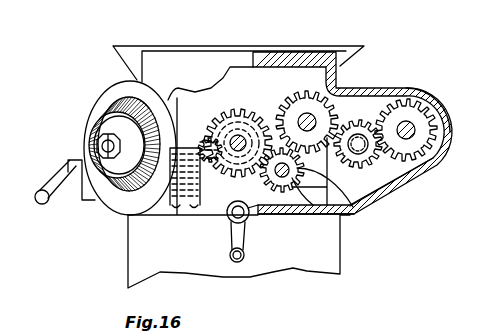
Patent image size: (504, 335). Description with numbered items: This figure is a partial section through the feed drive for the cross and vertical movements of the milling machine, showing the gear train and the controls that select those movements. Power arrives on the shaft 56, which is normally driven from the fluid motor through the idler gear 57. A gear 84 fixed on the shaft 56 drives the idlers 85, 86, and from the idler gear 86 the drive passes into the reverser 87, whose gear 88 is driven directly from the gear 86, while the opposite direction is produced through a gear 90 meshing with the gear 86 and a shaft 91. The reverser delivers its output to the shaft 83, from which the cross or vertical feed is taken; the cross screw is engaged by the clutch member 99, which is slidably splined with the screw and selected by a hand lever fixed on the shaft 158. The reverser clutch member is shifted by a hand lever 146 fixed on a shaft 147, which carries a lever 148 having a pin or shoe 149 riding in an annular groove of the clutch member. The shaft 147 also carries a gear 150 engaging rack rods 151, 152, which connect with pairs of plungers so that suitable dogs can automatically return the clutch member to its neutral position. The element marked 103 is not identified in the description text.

The pin or shoe 149 is at (135, 80).
The gear 88 is at (230, 67).
The reverser 87 is at (263, 100).
The shaft 83 is at (239, 135).
The clutch member 99 is at (306, 113).
The idler gear 86 is at (346, 93).
The idler gear 85 is at (380, 110).
The gear 84 is at (432, 117).
The shaft 56 is at (428, 138).
The nut 103 is at (97, 142).
The hand lever 146 is at (62, 173).
The lever 148 is at (205, 128).
The shaft 147 is at (203, 143).
The gear 150 is at (128, 215).
The rack rod 151 is at (175, 208).
The rack rod 152 is at (189, 206).
The shaft 158 is at (252, 217).
The idler gear 57 is at (243, 240).
The gear 90 is at (356, 214).
The shaft 91 is at (342, 228).